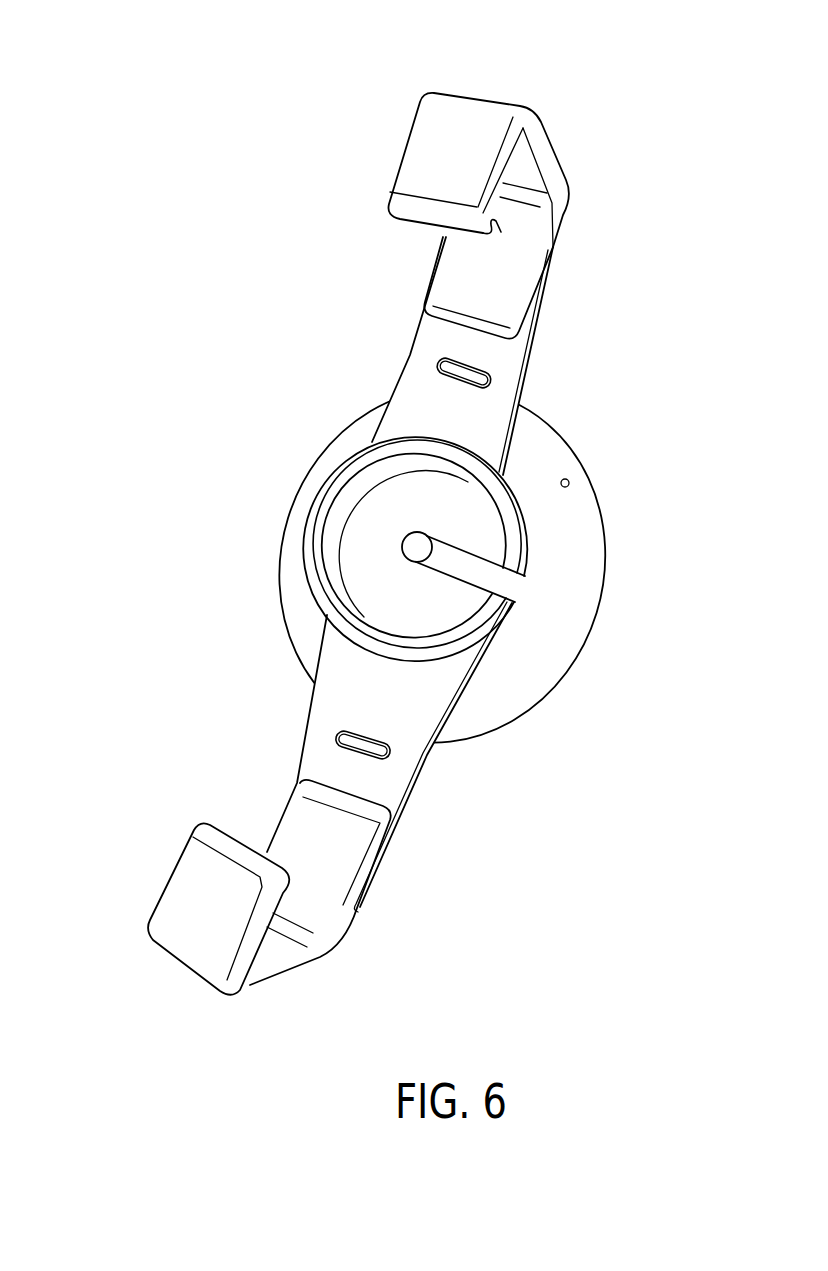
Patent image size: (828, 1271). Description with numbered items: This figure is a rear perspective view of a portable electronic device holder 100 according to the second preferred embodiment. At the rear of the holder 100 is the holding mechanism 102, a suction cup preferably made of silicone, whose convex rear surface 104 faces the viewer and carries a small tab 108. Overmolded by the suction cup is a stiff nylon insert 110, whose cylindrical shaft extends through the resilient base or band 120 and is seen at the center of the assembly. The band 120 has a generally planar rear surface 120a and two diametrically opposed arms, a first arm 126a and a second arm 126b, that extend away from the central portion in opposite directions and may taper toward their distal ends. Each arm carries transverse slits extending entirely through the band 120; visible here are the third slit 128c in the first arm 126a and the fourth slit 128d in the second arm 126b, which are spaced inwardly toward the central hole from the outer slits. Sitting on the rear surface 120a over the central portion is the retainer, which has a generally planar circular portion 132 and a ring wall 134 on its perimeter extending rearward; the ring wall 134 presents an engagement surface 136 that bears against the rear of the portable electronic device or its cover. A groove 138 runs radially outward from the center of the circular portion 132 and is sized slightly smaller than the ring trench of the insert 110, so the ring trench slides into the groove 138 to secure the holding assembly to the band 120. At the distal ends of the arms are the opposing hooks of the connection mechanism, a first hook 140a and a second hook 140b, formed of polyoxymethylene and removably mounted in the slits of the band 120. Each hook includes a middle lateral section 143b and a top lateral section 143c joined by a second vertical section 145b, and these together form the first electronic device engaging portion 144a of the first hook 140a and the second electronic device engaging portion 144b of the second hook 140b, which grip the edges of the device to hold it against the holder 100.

The portable electronic device holder 100 is at (380, 556).
The holding mechanism 102 is at (452, 580).
The convex rear surface 104 is at (443, 565).
The tab 108 is at (614, 466).
The insert 110 is at (491, 477).
The band 120 is at (457, 356).
The rear surface 120a is at (377, 757).
The first arm 126a is at (562, 361).
The second arm 126b is at (433, 757).
The third slit 128c is at (416, 362).
The fourth slit 128d is at (317, 757).
The circular portion 132 is at (362, 546).
The ring wall 134 is at (382, 549).
The engagement surface 136 is at (354, 546).
The groove 138 is at (532, 569).
The first hook 140a is at (478, 140).
The second hook 140b is at (218, 945).
The middle lateral section 143b is at (440, 599).
The top lateral section 143c is at (285, 508).
The first electronic device engaging portion 144a is at (420, 140).
The second electronic device engaging portion 144b is at (289, 945).
The second vertical section 145b is at (441, 607).